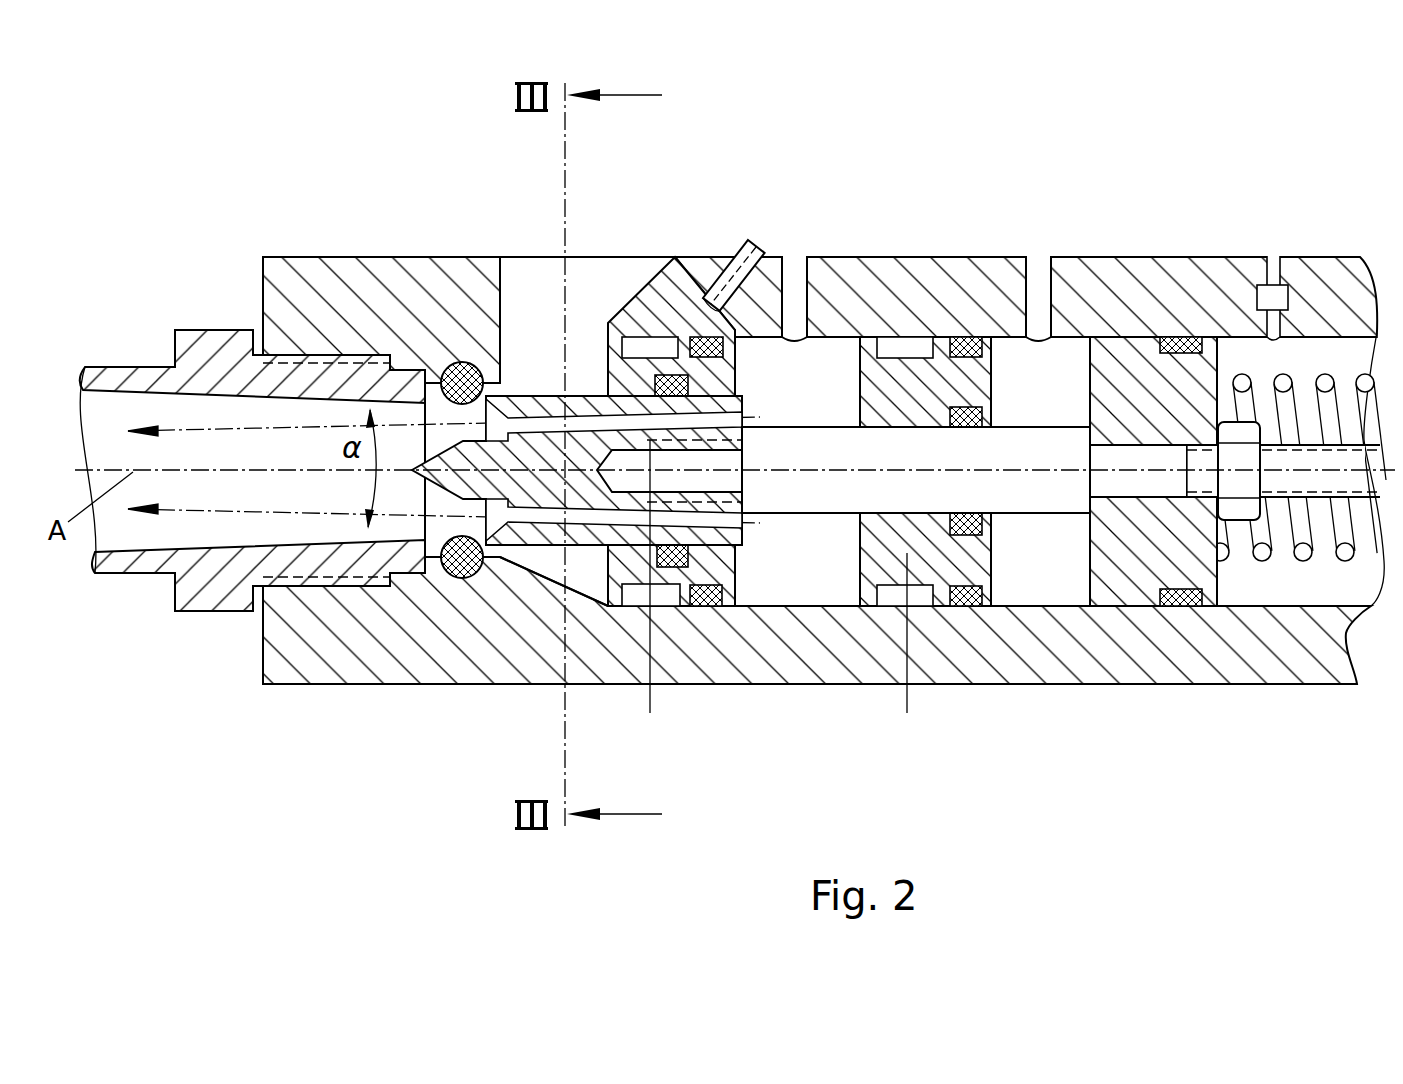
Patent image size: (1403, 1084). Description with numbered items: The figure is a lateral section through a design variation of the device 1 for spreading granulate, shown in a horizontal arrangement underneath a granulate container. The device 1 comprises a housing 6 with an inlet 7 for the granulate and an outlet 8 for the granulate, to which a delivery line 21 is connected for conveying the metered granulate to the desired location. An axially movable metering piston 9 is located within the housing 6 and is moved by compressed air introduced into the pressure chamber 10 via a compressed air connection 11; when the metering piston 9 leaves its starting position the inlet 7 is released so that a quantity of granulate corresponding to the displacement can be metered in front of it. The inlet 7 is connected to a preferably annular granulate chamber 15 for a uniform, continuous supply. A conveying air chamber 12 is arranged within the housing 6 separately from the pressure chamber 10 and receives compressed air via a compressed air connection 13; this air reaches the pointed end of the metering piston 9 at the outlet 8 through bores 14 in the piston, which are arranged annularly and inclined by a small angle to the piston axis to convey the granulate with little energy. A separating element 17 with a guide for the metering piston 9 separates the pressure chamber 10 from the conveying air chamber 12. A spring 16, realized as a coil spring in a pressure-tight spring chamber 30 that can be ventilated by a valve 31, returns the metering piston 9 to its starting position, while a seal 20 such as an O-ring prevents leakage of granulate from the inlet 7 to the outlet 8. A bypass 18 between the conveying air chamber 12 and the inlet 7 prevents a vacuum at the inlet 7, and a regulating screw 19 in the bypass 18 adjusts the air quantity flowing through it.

The device 1 is at (215, 174).
The housing 6 is at (963, 310).
The inlet 7 is at (582, 300).
The outlet 8 is at (262, 440).
The metering piston 9 is at (715, 535).
The pressure chamber 10 is at (1038, 553).
The compressed air connection 11 is at (1040, 290).
The conveying air chamber 12 is at (807, 553).
The compressed air connection 13 is at (795, 290).
The bore 14 is at (550, 420).
The granulate chamber 15 is at (560, 557).
The spring 16 is at (1303, 553).
The separating element 17 is at (920, 397).
The bypass 18 is at (680, 290).
The regulating screw 19 is at (735, 275).
The seal 20 is at (460, 365).
The delivery line 21 is at (132, 383).
The spring chamber 30 is at (1293, 352).
The valve 31 is at (1260, 302).